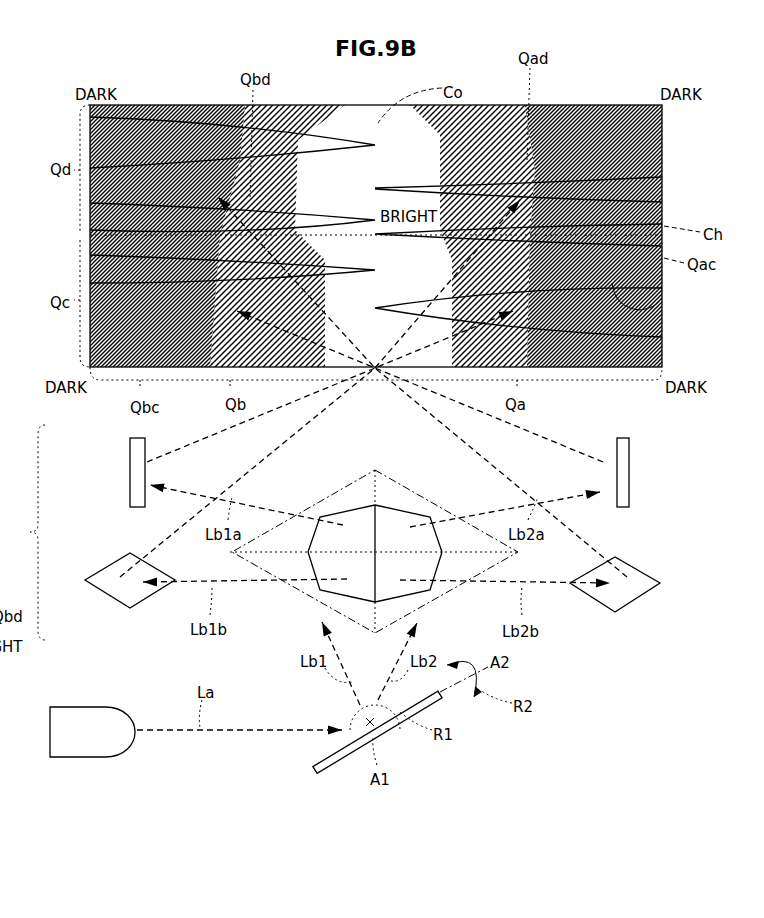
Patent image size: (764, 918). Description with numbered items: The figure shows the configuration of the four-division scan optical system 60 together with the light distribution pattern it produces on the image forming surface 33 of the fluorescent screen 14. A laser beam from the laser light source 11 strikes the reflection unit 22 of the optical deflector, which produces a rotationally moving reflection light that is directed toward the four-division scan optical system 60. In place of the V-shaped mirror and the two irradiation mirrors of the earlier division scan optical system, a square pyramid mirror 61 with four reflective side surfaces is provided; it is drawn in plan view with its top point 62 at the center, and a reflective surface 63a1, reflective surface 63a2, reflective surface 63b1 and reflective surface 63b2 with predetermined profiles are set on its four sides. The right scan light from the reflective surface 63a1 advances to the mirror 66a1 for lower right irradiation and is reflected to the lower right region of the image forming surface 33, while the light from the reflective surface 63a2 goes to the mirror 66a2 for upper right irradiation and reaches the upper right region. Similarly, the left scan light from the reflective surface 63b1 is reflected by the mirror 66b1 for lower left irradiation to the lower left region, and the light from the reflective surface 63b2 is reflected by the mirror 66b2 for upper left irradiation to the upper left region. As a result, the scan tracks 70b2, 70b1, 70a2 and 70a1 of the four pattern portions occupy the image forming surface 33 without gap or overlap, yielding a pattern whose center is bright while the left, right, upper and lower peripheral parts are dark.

The fluorescent screen 14 is at (75, 231).
The image forming surface 33 is at (662, 150).
The scan track 70b2 is at (200, 103).
The scan track 70b1 is at (90, 324).
The scan track 70a2 is at (563, 143).
The scan track 70a1 is at (662, 296).
The four-division scan optical system 60 is at (28, 532).
The mirror for lower right irradiation 66a1 is at (128, 470).
The mirror for upper right irradiation 66a2 is at (105, 595).
The mirror for lower left irradiation 66b1 is at (630, 470).
The mirror for upper left irradiation 66b2 is at (635, 605).
The square pyramid mirror 61 is at (443, 508).
The top point 62 is at (385, 515).
The reflective surface 63a1 is at (357, 527).
The reflective surface 63a2 is at (342, 588).
The reflective surface 63b1 is at (405, 523).
The reflective surface 63b2 is at (428, 582).
The laser light source 11 is at (80, 705).
The reflection unit 22 is at (340, 758).